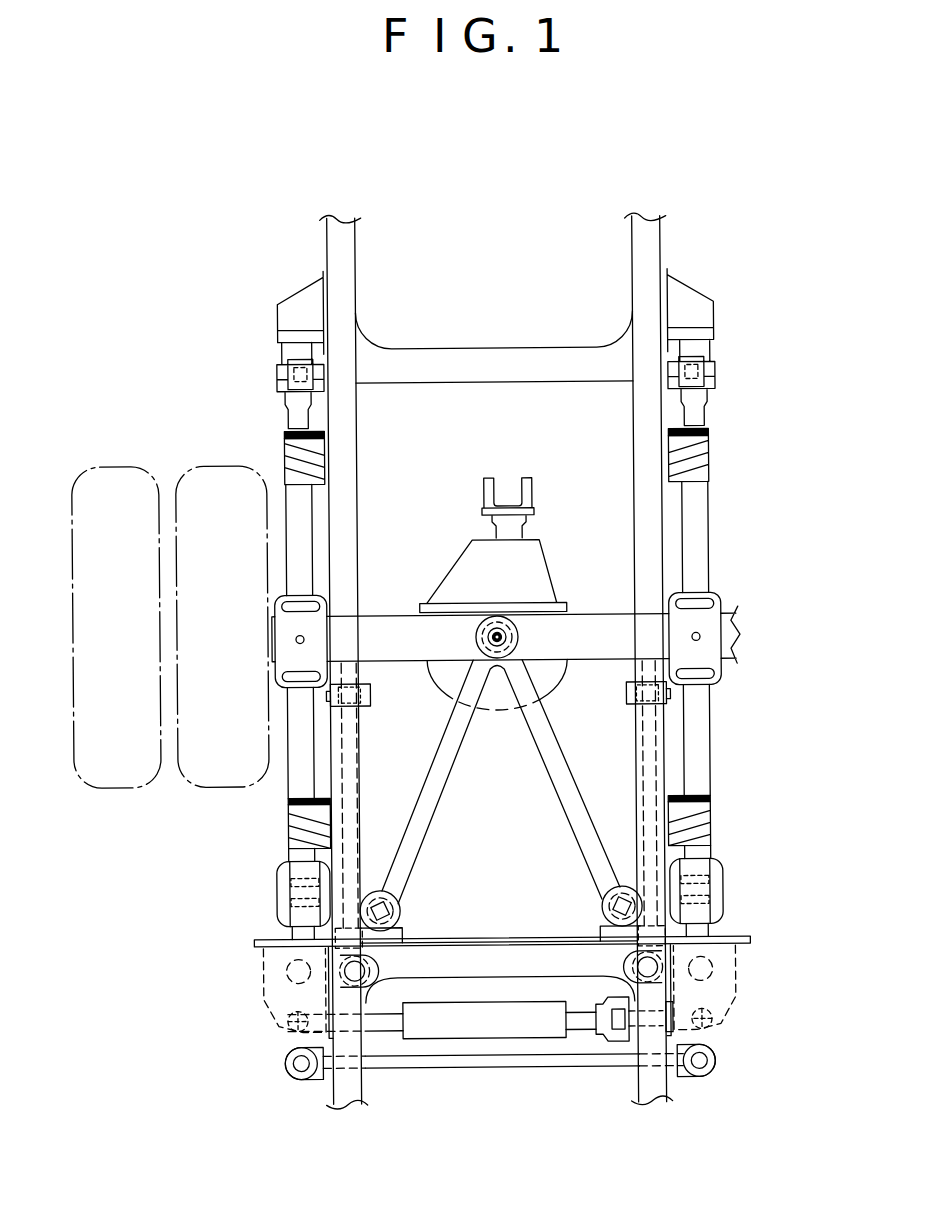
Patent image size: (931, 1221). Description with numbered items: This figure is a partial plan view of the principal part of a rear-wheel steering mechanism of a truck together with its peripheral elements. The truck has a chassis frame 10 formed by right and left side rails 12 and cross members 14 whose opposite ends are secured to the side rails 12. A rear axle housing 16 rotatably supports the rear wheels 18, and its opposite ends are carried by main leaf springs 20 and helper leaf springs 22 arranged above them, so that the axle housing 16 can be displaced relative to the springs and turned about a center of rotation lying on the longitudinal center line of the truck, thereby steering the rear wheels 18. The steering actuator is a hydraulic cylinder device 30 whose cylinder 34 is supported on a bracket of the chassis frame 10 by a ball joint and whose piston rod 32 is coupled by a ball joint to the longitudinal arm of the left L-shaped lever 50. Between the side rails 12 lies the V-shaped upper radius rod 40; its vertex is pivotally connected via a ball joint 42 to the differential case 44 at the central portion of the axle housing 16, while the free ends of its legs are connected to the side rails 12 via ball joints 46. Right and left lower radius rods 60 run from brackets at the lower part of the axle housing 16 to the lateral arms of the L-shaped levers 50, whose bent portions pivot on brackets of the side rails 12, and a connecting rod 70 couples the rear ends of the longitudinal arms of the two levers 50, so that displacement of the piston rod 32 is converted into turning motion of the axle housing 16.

The chassis frame 10 is at (500, 224).
The side rail 12 is at (360, 252).
The cross member 14 is at (494, 356).
The rear axle housing 16 is at (583, 632).
The rear wheel 18 is at (190, 466).
The main leaf spring 20 is at (722, 404).
The helper leaf spring 22 is at (692, 513).
The hydraulic cylinder device 30 is at (556, 1042).
The piston rod 32 is at (385, 1020).
The cylinder 34 is at (472, 1024).
The upper radius rod 40 is at (437, 804).
The ball joint 42 is at (479, 634).
The differential case 44 is at (497, 708).
The ball joint 46 is at (398, 909).
The L-shaped lever 50 is at (272, 1030).
The lower radius rod 60 is at (352, 770).
The connecting rod 70 is at (524, 1058).